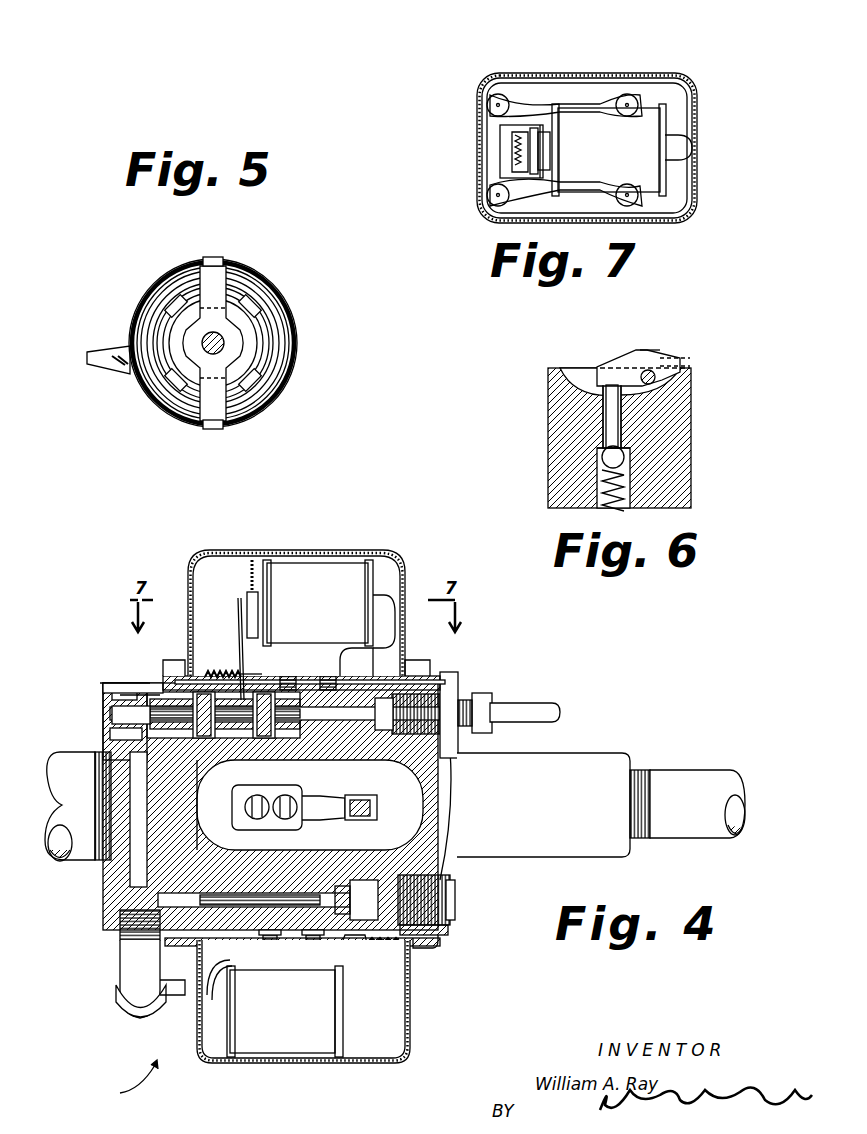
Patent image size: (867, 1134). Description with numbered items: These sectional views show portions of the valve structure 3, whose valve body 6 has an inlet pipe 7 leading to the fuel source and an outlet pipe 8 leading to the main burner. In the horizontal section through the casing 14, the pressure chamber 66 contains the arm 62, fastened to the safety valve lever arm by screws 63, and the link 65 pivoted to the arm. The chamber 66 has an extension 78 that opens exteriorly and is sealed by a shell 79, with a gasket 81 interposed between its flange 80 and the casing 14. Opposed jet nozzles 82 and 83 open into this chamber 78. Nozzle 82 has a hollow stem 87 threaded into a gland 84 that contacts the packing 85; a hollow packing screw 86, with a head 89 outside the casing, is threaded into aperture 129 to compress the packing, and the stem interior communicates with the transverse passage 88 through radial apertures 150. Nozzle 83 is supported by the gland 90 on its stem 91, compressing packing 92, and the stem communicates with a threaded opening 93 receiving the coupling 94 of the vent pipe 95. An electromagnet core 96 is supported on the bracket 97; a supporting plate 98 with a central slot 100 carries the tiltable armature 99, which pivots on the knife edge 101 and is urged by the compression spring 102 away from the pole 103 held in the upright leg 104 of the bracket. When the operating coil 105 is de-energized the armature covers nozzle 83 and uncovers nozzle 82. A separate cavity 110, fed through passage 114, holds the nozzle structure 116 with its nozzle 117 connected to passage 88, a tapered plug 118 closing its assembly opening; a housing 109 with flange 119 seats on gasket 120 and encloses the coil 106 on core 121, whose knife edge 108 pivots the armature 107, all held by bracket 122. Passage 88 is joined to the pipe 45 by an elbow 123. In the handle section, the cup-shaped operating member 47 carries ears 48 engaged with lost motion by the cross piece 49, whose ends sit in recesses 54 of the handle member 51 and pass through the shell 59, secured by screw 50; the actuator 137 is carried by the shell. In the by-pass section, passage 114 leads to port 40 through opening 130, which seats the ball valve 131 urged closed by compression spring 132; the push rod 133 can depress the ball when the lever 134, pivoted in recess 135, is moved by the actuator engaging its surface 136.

In FIG. 4, the valve structure 3 is at (129, 1082).
In FIG. 6, the valve body 6 is at (552, 387).
In FIG. 4, the valve body 6 is at (595, 760).
In FIG. 4, the inlet conduit or pipe 7 is at (75, 860).
In FIG. 4, the outlet conduit or pipe 8 is at (727, 772).
In FIG. 4, the casing 14 is at (440, 837).
In FIG. 6, the port 40 is at (622, 420).
In FIG. 4, the pipe 45 is at (185, 996).
In FIG. 5, the operating member 47 is at (268, 312).
In FIG. 5, the ears 48 is at (182, 275).
In FIG. 5, the cross piece 49 is at (235, 343).
In FIG. 5, the screw 50 is at (205, 338).
In FIG. 5, the handle member 51 is at (292, 363).
In FIG. 5, the recesses 54 is at (205, 258).
In FIG. 5, the shell 59 is at (243, 284).
In FIG. 4, the arm 62 is at (335, 820).
In FIG. 4, the screws 63 is at (262, 797).
In FIG. 4, the link 65 is at (362, 800).
In FIG. 4, the pressure chamber 66 is at (410, 803).
In FIG. 7, the chamber extension 78 is at (690, 196).
In FIG. 4, the chamber extension 78 is at (230, 765).
In FIG. 7, the shell or casing 79 is at (697, 110).
In FIG. 4, the shell or casing 79 is at (358, 550).
In FIG. 4, the flange 80 is at (425, 665).
In FIG. 4, the gasket 81 is at (170, 680).
In FIG. 4, the jet nozzle 82 is at (218, 733).
In FIG. 4, the jet nozzle 83 is at (258, 733).
In FIG. 4, the gland 84 is at (198, 690).
In FIG. 4, the packing 85 is at (183, 660).
In FIG. 4, the hollow packing screw 86 is at (160, 690).
In FIG. 4, the hollow stem 87 is at (115, 716).
In FIG. 4, the port or passage 88 is at (130, 770).
In FIG. 4, the head 89 is at (105, 703).
In FIG. 4, the gland 90 is at (290, 660).
In FIG. 4, the stem 91 is at (290, 797).
In FIG. 4, the packing 92 is at (380, 722).
In FIG. 4, the threaded opening 93 is at (415, 728).
In FIG. 4, the pipe coupling structure 94 is at (458, 684).
In FIG. 4, the vent pipe 95 is at (530, 723).
In FIG. 7, the core 96 is at (690, 148).
In FIG. 4, the core 96 is at (392, 620).
In FIG. 7, the bracket 97 is at (600, 98).
In FIG. 4, the bracket 97 is at (330, 660).
In FIG. 7, the supporting plate 98 is at (505, 135).
In FIG. 4, the supporting plate 98 is at (385, 660).
In FIG. 7, the armature 99 is at (535, 165).
In FIG. 4, the armature 99 is at (240, 615).
In FIG. 7, the slot 100 is at (520, 140).
In FIG. 4, the knife edge 101 is at (270, 660).
In FIG. 7, the compression spring 102 is at (515, 157).
In FIG. 4, the compression spring 102 is at (238, 675).
In FIG. 4, the pole 103 is at (250, 592).
In FIG. 7, the upright leg 104 is at (541, 130).
In FIG. 4, the upright leg 104 is at (260, 572).
In FIG. 7, the operating coil 105 is at (609, 150).
In FIG. 4, the operating coil 105 is at (318, 603).
In FIG. 4, the coil 106 is at (285, 1011).
In FIG. 4, the armature 107 is at (362, 1010).
In FIG. 4, the knife edge 108 is at (355, 950).
In FIG. 4, the shell or housing 109 is at (365, 1063).
In FIG. 4, the cavity 110 is at (450, 886).
In FIG. 6, the passage 114 is at (600, 488).
In FIG. 4, the nozzle structure 116 is at (330, 876).
In FIG. 4, the nozzle 117 is at (340, 905).
In FIG. 4, the tapered plug 118 is at (455, 908).
In FIG. 4, the flange 119 is at (425, 950).
In FIG. 4, the gasket 120 is at (430, 935).
In FIG. 4, the core 121 is at (216, 1000).
In FIG. 4, the bracket 122 is at (272, 948).
In FIG. 4, the elbow 123 is at (128, 965).
In FIG. 4, the aperture 129 is at (125, 740).
In FIG. 6, the opening 130 is at (602, 448).
In FIG. 6, the ball valve 131 is at (625, 455).
In FIG. 6, the compression spring 132 is at (626, 492).
In FIG. 6, the push rod 133 is at (608, 432).
In FIG. 6, the lever 134 is at (622, 362).
In FIG. 6, the recess 135 is at (680, 365).
In FIG. 6, the surface 136 is at (647, 350).
In FIG. 5, the actuator 137 is at (107, 375).
In FIG. 6, the actuator 137 is at (652, 368).
In FIG. 4, the radial apertures 150 is at (118, 690).